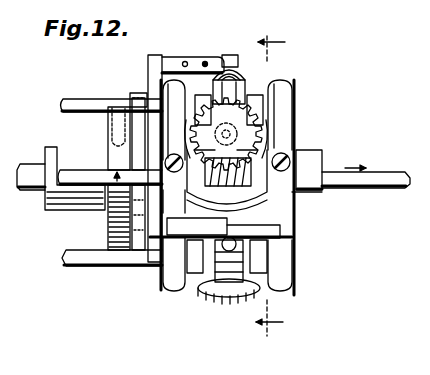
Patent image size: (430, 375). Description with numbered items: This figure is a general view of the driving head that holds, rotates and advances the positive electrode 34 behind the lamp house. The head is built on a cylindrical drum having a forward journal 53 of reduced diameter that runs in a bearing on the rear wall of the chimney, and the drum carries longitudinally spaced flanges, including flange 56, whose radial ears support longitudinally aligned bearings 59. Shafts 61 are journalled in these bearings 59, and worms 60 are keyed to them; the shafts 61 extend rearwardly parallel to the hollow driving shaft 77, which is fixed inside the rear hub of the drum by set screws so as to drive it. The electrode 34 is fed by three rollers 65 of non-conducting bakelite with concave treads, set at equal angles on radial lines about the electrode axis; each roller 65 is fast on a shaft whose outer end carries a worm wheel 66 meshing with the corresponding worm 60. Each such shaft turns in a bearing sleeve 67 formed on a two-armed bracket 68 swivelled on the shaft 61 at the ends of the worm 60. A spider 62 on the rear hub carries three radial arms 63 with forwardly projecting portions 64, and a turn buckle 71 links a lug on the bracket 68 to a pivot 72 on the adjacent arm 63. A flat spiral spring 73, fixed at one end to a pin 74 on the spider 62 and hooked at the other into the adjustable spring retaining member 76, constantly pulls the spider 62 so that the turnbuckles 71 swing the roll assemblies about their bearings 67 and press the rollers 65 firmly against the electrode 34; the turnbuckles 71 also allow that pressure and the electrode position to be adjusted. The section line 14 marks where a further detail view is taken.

The section line 14 is at (270, 188).
The positive electrode 34 is at (26, 170).
The forward journal 53 is at (314, 171).
The flange 56 is at (289, 158).
The bearing 59 is at (284, 84).
The worm 60 is at (300, 194).
The shaft 61 is at (80, 103).
The spider 62 is at (152, 95).
The radial arm 63 is at (150, 60).
The forwardly projecting portion 64 is at (193, 64).
The feed roller 65 is at (256, 116).
The worm wheel 66 is at (258, 127).
The bearing sleeve 67 is at (262, 102).
The two-armed bracket 68 is at (226, 134).
The turn buckle 71 is at (201, 276).
The pivot 72 is at (258, 249).
The flat spiral spring 73 is at (137, 125).
The pin 74 is at (130, 100).
The adjustable spring retaining member 76 is at (122, 232).
The hollow driving shaft 77 is at (52, 150).